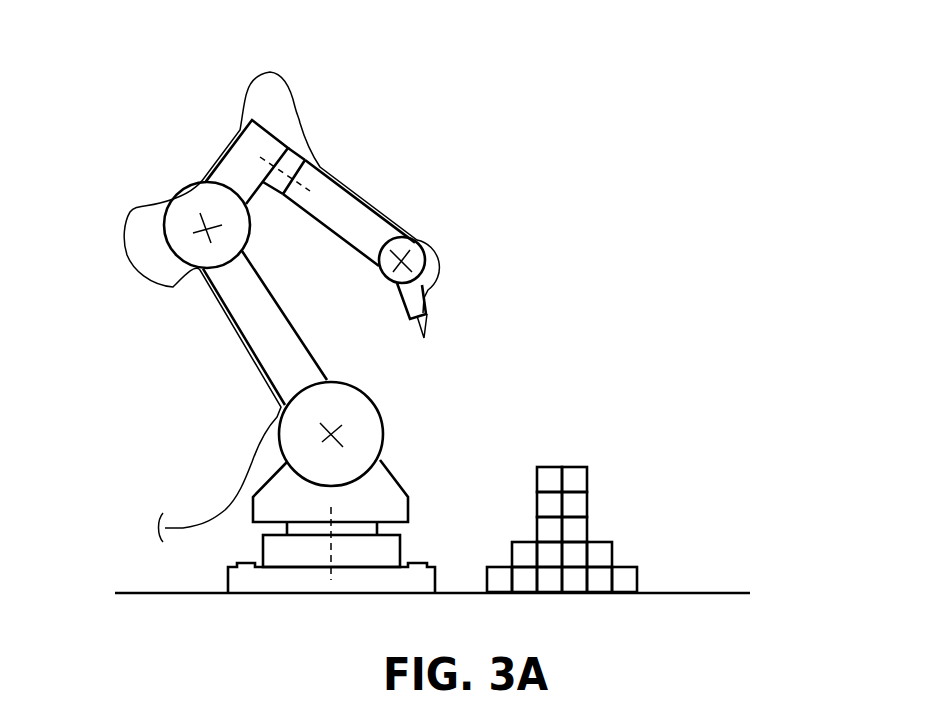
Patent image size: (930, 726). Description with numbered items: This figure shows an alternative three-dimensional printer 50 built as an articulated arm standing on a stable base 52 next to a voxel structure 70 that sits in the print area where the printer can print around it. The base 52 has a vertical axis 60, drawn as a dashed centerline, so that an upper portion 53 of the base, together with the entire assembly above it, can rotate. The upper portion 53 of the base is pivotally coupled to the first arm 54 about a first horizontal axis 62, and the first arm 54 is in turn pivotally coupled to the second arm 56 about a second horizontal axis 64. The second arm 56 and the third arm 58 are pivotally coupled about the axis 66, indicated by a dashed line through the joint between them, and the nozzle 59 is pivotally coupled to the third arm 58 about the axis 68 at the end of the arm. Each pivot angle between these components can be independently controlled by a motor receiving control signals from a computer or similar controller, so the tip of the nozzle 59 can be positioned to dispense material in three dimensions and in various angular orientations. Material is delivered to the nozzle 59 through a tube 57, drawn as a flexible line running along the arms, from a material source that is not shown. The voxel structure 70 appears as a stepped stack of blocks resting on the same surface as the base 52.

The three-dimensional printer 50 is at (722, 181).
The base 52 is at (263, 545).
The upper portion of the base 53 is at (380, 493).
The first arm 54 is at (270, 315).
The second arm 56 is at (238, 155).
The tube 57 is at (270, 72).
The third arm 58 is at (350, 207).
The nozzle 59 is at (425, 300).
The vertical axis 60 is at (330, 547).
The first horizontal axis 62 is at (330, 425).
The second horizontal axis 64 is at (203, 242).
The axis 66 is at (276, 152).
The axis 68 is at (412, 240).
The voxel structure 70 is at (722, 426).